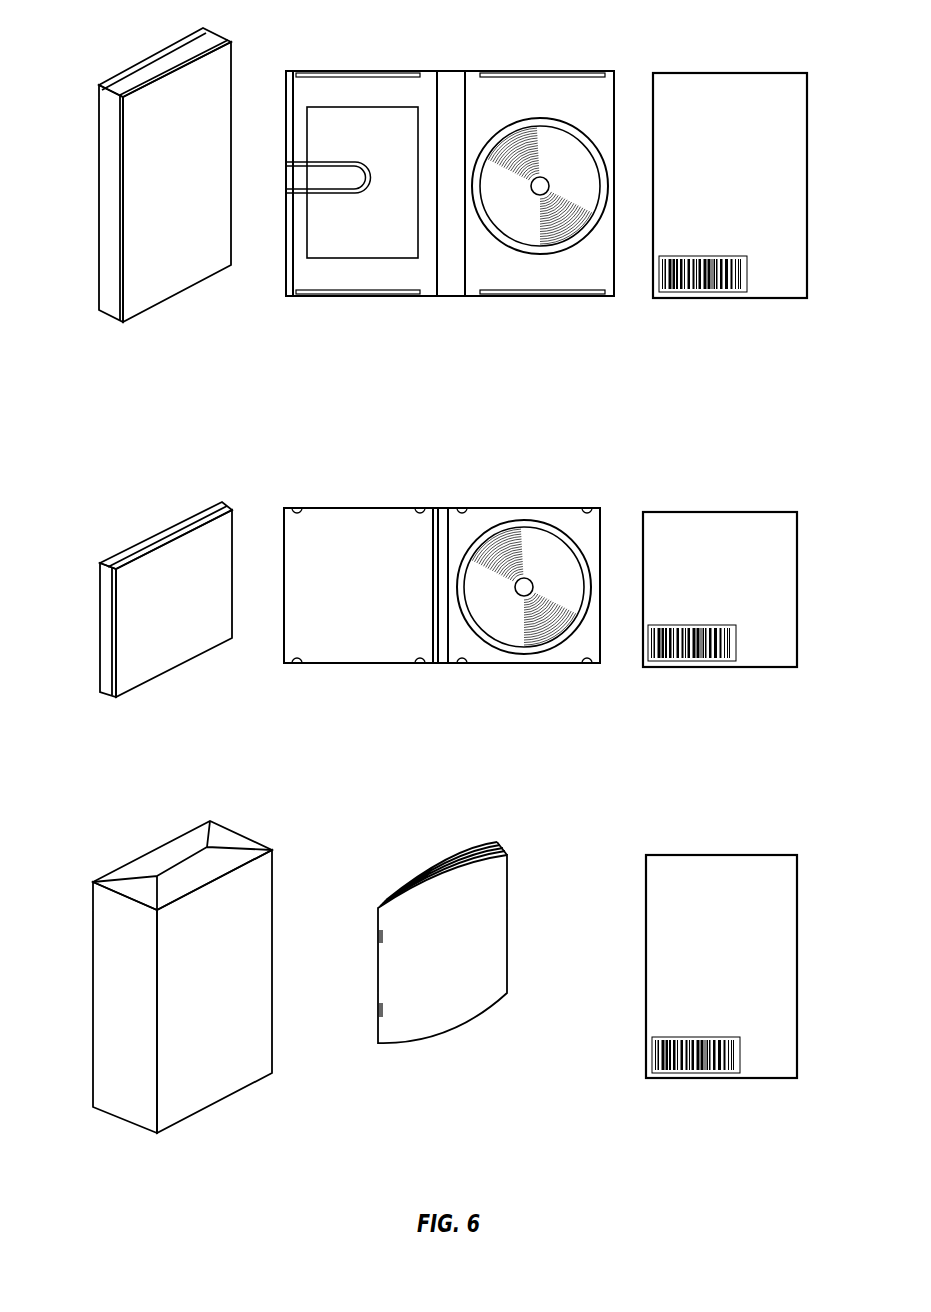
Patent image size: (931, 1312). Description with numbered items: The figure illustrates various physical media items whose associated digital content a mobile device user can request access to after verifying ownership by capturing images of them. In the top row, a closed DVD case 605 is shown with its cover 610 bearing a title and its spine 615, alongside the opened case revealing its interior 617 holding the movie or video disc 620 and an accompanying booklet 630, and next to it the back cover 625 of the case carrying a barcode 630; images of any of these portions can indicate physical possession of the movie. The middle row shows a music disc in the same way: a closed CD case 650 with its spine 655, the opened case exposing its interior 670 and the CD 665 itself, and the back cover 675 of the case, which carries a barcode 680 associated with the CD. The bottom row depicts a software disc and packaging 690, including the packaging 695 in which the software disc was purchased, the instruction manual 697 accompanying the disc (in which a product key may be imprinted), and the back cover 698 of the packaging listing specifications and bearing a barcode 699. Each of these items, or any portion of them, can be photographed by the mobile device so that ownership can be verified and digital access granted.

The DVD case (closed) 605 is at (171, 166).
The cover of the DVD case 610 is at (220, 68).
The spine of the DVD case 615 is at (108, 162).
The interior of the DVD case 617 is at (451, 207).
The movie or video disc 620 is at (515, 222).
The back cover of the DVD case 625 is at (775, 93).
The barcode / booklet 630 is at (368, 237).
The CD jewel case (closed) 650 is at (138, 595).
The spine of the CD case 655 is at (105, 582).
The music disc 665 is at (513, 635).
The interior of the CD case 670 is at (442, 613).
The back cover of the CD case 675 is at (748, 613).
The barcode associated with the CD 680 is at (677, 660).
The software disc and packaging 690 is at (158, 973).
The packaging 695 is at (107, 958).
The instruction manual 697 is at (448, 1003).
The back cover of the packaging 698 is at (749, 991).
The barcode imprinted on the packaging 699 is at (702, 1072).